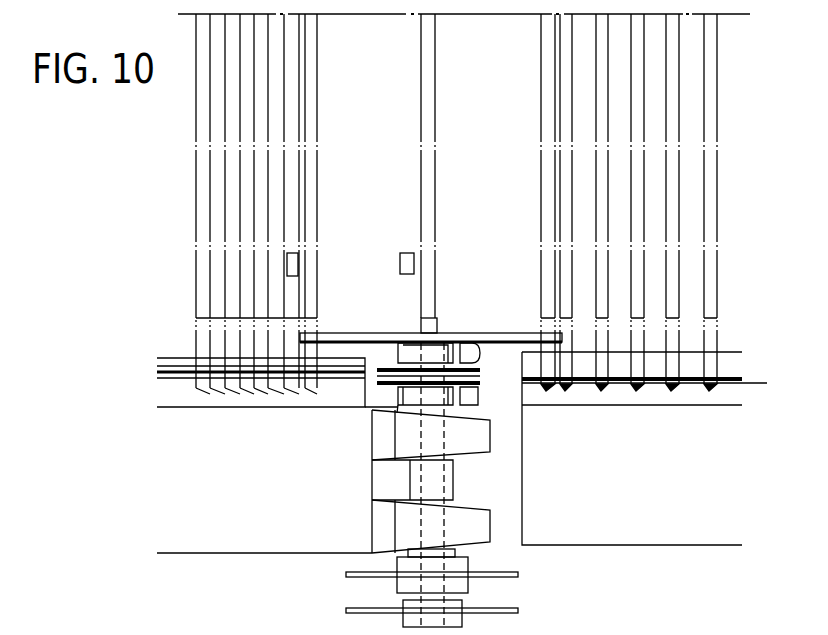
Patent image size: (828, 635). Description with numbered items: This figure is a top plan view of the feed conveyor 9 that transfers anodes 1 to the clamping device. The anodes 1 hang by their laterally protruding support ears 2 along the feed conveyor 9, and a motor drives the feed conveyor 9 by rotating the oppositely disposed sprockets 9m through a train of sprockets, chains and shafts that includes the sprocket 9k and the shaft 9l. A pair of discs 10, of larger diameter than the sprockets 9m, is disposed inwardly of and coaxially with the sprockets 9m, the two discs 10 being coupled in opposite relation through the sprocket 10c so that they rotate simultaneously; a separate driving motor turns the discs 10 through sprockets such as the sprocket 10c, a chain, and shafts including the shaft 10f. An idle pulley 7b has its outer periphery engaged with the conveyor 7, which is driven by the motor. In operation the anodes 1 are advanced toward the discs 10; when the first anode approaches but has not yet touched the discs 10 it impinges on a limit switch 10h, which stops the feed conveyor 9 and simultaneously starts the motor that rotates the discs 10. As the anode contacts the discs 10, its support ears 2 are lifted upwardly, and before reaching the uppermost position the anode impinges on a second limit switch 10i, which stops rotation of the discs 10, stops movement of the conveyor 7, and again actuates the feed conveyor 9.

The anode 1 is at (197, 122).
The support ear 2 is at (428, 350).
The conveyor 7 is at (750, 386).
The idle pulley 7b is at (462, 392).
The feed conveyor 9 is at (178, 362).
The sprocket 9k is at (518, 575).
The shaft 9l is at (453, 467).
The sprocket 9m is at (477, 345).
The disc 10 is at (500, 333).
The sprocket 10c is at (518, 611).
The shaft 10f is at (435, 483).
The limit switch 10h is at (298, 266).
The limit switch 10i is at (403, 253).